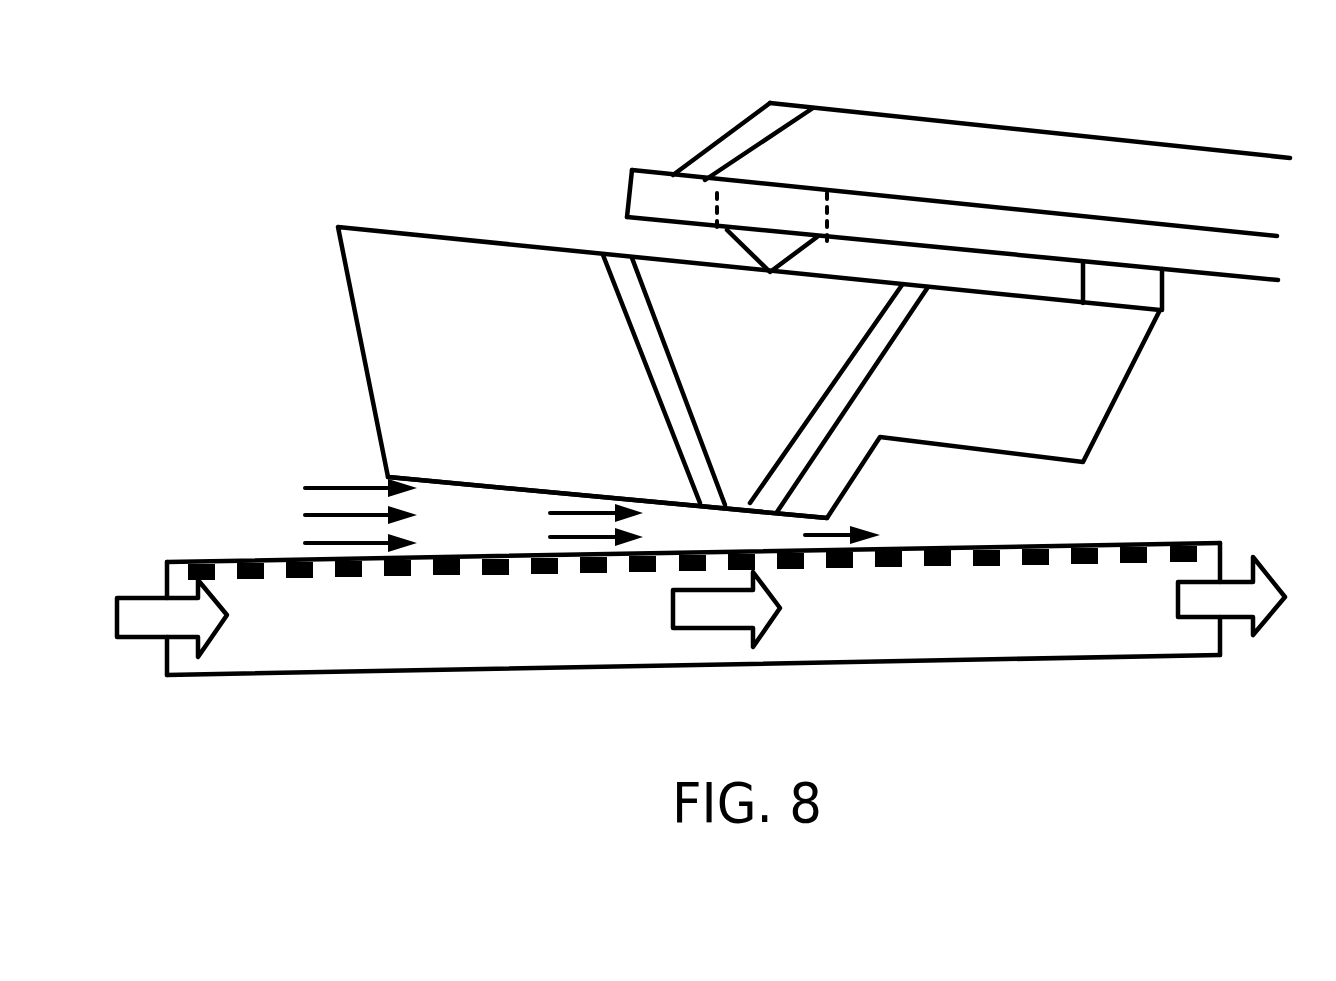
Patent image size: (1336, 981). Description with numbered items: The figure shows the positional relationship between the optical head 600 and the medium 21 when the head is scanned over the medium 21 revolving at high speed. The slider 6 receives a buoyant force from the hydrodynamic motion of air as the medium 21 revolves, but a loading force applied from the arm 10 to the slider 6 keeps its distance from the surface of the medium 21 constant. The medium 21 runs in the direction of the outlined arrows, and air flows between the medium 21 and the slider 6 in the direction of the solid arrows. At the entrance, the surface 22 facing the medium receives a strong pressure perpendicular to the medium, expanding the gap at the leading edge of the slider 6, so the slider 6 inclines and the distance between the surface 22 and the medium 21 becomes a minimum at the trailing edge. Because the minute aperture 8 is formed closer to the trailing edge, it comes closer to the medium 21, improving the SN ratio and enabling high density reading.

The optical head 600 is at (300, 169).
The slider 6 is at (402, 328).
The minute aperture 8 is at (745, 503).
The arm 10 is at (1207, 253).
The medium 21 is at (1038, 625).
The surface facing the medium 22 is at (442, 477).